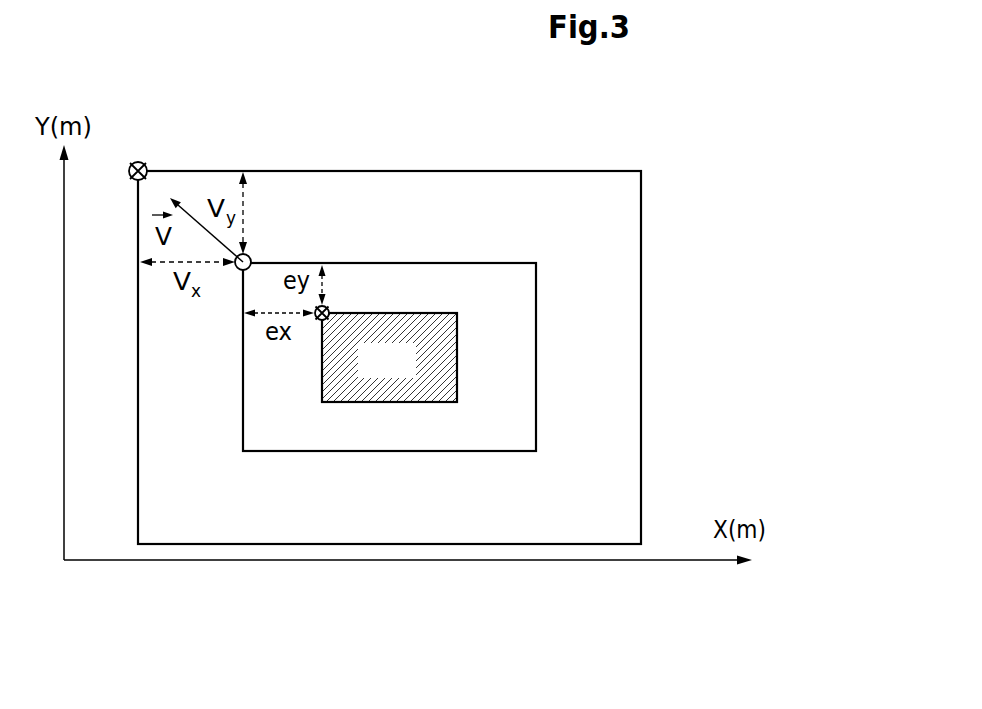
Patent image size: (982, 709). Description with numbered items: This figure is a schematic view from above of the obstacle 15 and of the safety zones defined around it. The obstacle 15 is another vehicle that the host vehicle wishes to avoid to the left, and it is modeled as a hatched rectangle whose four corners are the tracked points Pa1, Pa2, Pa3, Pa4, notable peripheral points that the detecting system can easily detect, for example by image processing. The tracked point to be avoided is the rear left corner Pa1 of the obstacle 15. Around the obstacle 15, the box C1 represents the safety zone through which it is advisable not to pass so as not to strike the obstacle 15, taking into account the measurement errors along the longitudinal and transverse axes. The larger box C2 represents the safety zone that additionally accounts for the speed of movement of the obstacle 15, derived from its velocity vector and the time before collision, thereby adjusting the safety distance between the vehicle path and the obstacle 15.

The obstacle 15 is at (400, 371).
The box C1 is at (536, 318).
The box C2 is at (641, 240).
The tracked point Pa1 is at (330, 309).
The tracked point Pa2 is at (315, 421).
The tracked point Pa3 is at (457, 421).
The tracked point Pa4 is at (458, 299).